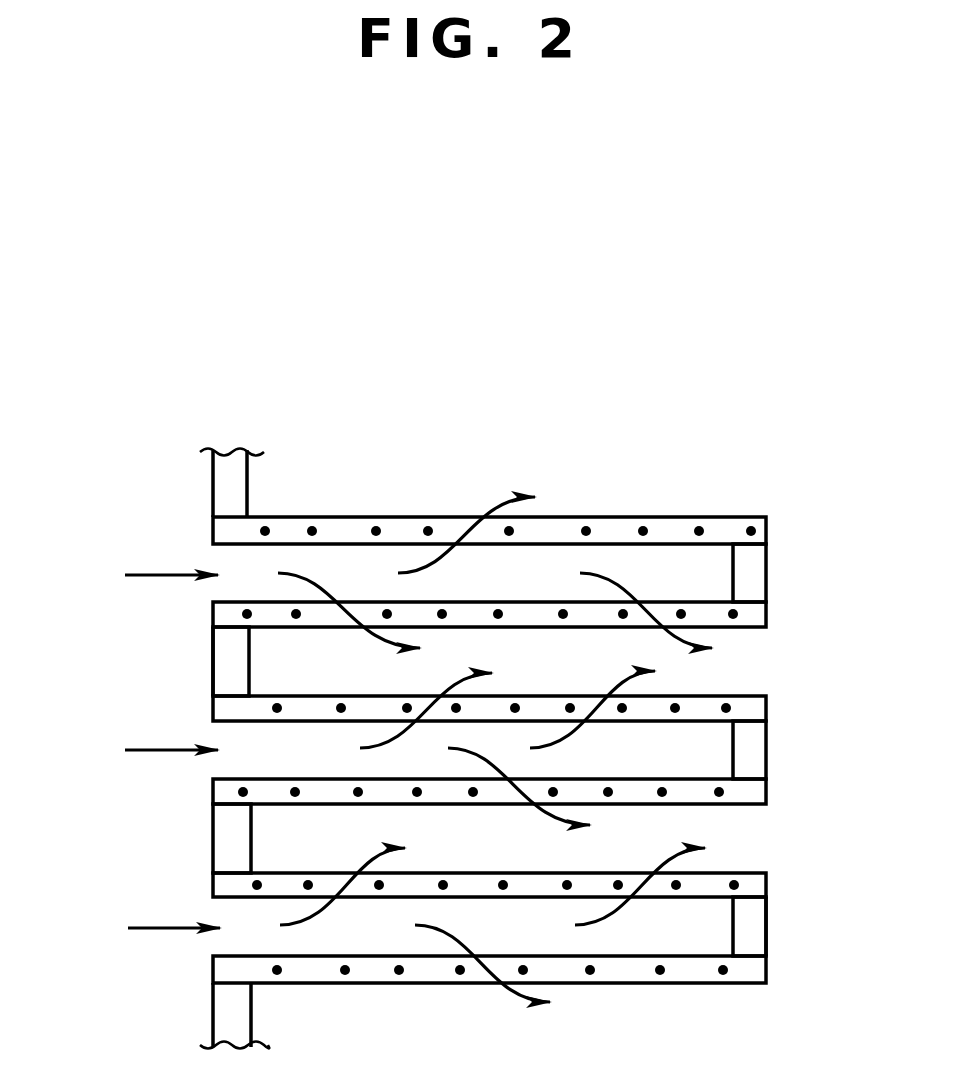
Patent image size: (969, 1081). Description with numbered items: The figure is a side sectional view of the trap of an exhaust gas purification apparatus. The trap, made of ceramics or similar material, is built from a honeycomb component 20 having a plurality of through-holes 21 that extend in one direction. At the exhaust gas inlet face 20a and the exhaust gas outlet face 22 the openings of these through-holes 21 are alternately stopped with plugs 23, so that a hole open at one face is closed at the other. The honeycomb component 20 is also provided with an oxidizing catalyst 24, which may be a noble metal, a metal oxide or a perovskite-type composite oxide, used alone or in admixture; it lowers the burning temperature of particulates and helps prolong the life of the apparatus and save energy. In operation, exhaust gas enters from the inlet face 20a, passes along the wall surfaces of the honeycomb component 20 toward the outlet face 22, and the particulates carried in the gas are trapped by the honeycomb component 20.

The honeycomb component 20 is at (489, 692).
The exhaust gas inlet face 20a is at (205, 688).
The through-holes 21 is at (350, 565).
The exhaust gas outlet face 22 is at (775, 913).
The plugs 23 is at (224, 492).
The oxidizing catalyst 24 is at (428, 530).